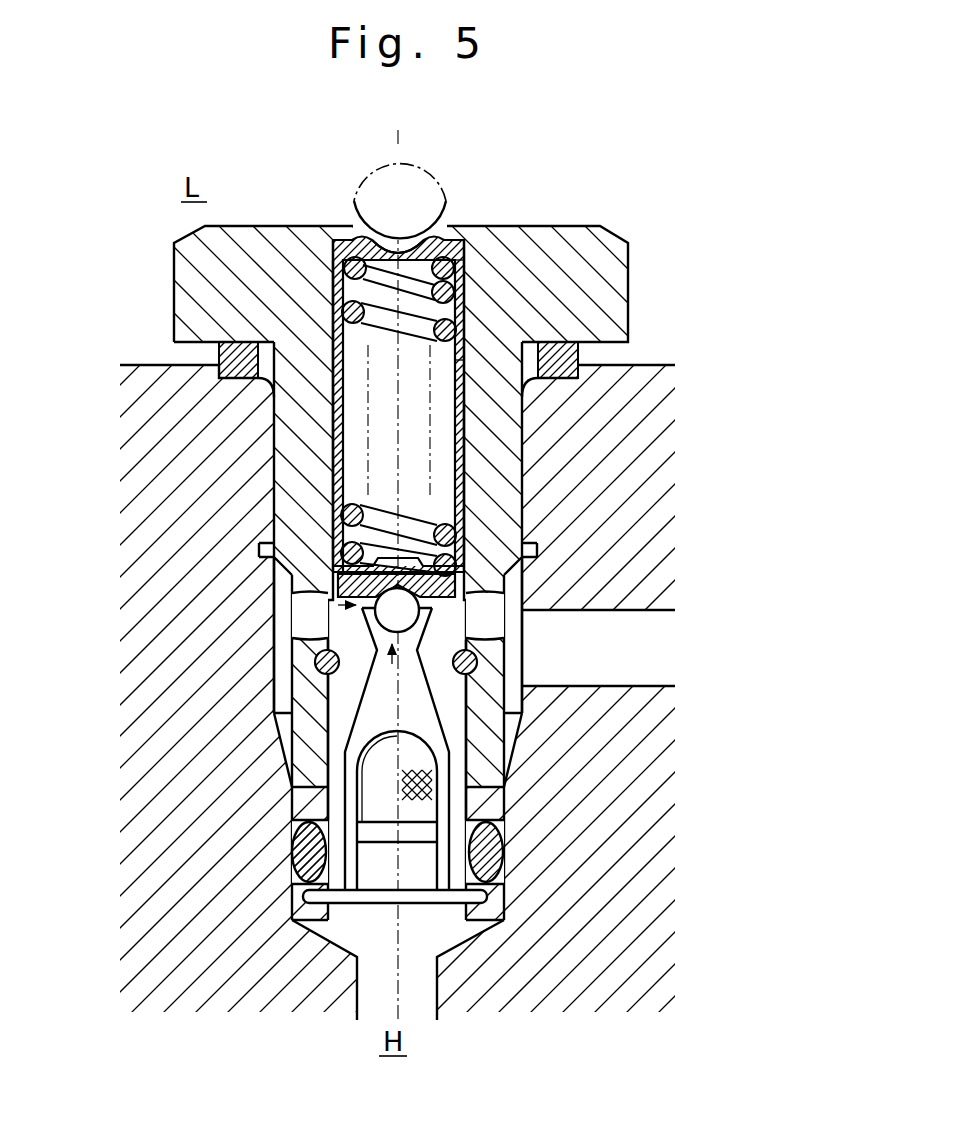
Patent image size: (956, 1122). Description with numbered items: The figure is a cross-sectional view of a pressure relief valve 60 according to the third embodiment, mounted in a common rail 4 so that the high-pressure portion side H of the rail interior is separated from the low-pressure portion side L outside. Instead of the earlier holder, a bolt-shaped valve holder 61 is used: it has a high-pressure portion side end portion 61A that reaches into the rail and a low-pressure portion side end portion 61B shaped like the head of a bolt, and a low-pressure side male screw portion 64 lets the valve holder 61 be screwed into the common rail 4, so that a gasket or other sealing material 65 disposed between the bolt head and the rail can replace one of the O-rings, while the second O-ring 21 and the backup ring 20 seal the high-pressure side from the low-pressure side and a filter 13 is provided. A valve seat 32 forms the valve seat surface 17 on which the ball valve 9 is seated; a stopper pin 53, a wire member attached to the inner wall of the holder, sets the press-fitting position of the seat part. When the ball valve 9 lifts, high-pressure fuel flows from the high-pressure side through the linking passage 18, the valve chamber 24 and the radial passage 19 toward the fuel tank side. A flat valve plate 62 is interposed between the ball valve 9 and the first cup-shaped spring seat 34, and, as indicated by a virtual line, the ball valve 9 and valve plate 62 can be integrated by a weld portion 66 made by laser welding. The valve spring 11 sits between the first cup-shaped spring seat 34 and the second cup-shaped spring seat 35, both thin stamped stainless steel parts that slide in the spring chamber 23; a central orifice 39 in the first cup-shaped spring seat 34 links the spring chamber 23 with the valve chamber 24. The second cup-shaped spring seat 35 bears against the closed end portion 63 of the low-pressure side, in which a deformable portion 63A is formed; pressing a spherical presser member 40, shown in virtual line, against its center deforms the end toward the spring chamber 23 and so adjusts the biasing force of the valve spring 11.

The common rail 4 is at (175, 364).
The ball valve 9 is at (522, 628).
The valve spring 11 is at (333, 295).
The filter 13 is at (298, 832).
The valve seat surface 17 is at (388, 658).
The linking passage 18 is at (366, 703).
The radial passage 19 is at (494, 612).
The backup ring 20 is at (410, 795).
The second O-ring 21 is at (496, 850).
The spring chamber 23 is at (419, 434).
The valve chamber 24 is at (372, 604).
The valve seat 32 is at (452, 726).
The first cup-shaped spring seat 34 is at (470, 470).
The second cup-shaped spring seat 35 is at (466, 278).
The central orifice 39 is at (420, 550).
The spherical presser member 40 is at (374, 158).
The stopper pin 53 is at (480, 662).
The pressure relief valve 60 is at (380, 561).
The bolt-shaped valve holder 61 is at (290, 440).
The high-pressure portion side end portion 61A is at (268, 768).
The low-pressure portion side end portion 61B is at (152, 283).
The flat valve plate 62 is at (490, 598).
The closed end portion 63 is at (398, 524).
The deformable portion 63A is at (408, 238).
The low-pressure side male screw portion 64 is at (330, 500).
The seal ring 65 is at (560, 356).
The weld portion 66 is at (292, 602).